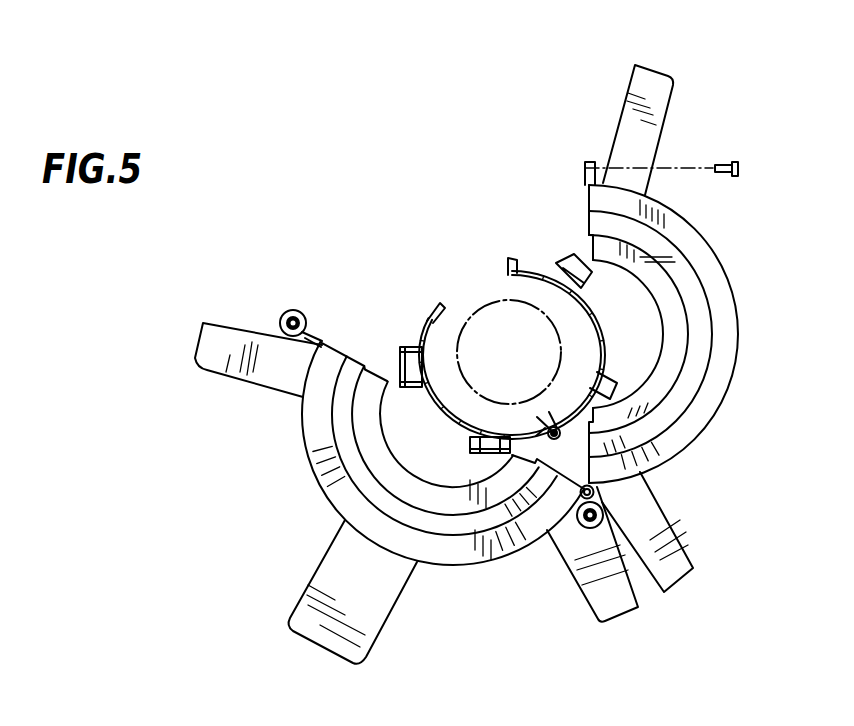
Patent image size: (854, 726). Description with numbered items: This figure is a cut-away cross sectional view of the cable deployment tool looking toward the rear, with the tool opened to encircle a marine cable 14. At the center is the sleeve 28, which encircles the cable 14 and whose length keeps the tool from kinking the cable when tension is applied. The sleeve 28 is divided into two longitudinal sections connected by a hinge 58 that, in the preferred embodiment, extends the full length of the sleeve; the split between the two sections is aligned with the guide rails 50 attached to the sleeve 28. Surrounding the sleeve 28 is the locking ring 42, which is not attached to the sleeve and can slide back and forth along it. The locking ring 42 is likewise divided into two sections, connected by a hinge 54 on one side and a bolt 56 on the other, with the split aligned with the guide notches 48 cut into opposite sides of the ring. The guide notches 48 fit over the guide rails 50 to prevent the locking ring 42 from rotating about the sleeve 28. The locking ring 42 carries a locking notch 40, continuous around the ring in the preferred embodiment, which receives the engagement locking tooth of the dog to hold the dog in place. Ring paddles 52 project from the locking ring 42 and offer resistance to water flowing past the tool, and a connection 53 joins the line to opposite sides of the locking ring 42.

The cable 14 is at (484, 302).
The sleeve 28 is at (531, 257).
The locking notch 40 is at (698, 313).
The locking ring 42 is at (717, 250).
The guide notches 48 is at (586, 243).
The guide rails 50 is at (431, 306).
The ring paddles 52 is at (660, 70).
The connection 53 is at (289, 311).
The hinge 54 is at (600, 496).
The bolt 56 is at (737, 160).
The hinge 58 is at (553, 440).